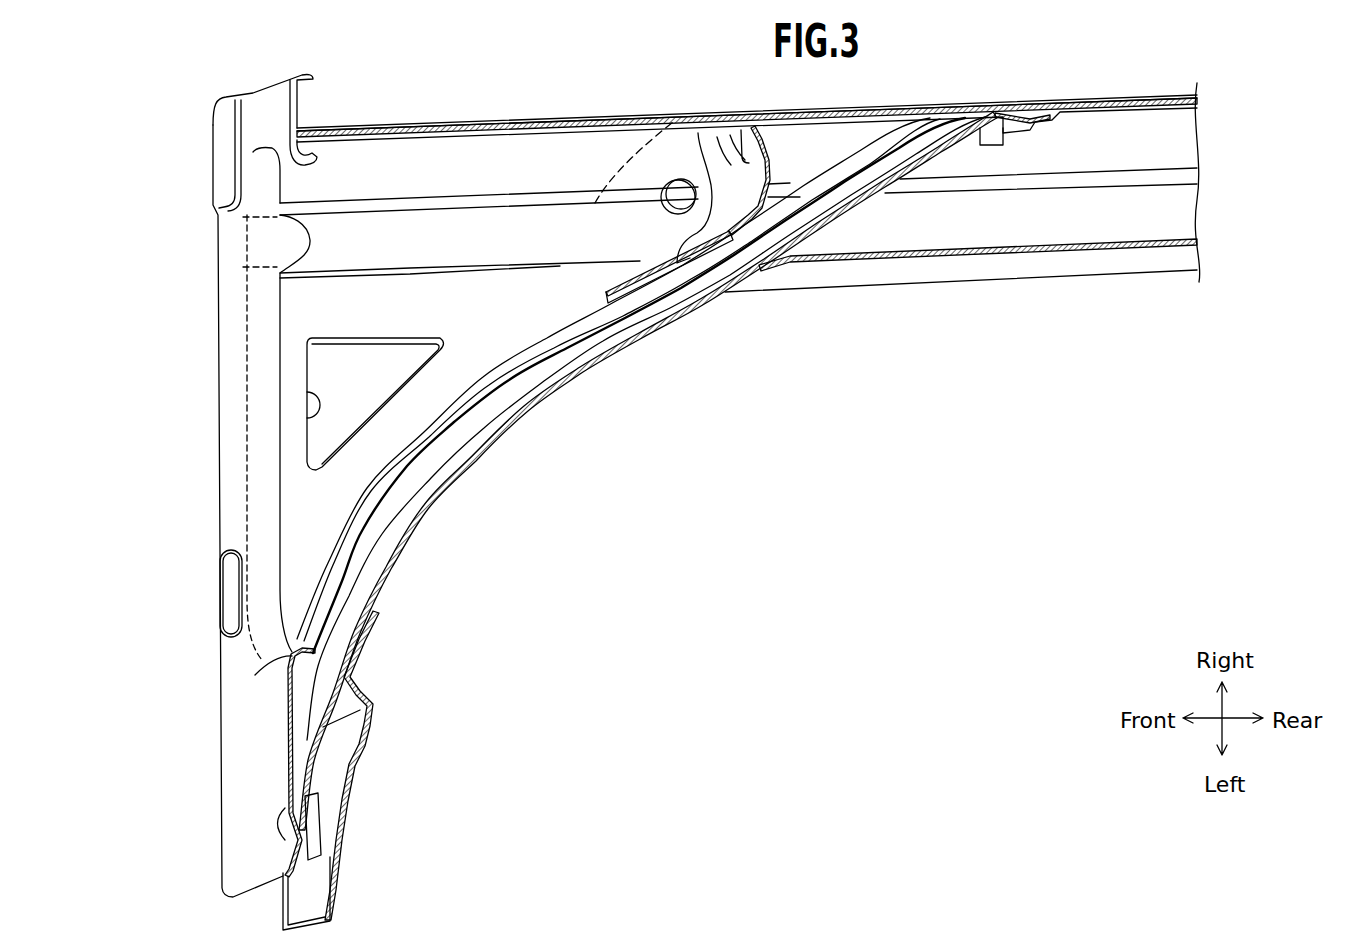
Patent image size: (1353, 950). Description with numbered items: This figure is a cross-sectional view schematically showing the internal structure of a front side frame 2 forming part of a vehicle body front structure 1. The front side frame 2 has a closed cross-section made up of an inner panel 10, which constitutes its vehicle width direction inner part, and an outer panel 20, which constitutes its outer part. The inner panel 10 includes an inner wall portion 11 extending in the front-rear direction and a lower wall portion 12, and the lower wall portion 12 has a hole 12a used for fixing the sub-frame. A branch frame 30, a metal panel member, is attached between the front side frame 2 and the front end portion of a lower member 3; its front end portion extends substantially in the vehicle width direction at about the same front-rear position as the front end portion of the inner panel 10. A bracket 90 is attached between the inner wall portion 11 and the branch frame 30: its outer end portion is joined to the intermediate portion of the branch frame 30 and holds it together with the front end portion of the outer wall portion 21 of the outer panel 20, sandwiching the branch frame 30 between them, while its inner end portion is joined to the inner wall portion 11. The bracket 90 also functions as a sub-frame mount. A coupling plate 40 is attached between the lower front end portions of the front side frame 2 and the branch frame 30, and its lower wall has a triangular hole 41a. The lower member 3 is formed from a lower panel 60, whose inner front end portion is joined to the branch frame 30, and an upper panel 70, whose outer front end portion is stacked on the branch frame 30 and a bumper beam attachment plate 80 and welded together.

The vehicle body front structure 1 is at (1036, 418).
The front side frame 2 is at (1045, 75).
The lower member 3 is at (430, 762).
The inner panel 10 is at (597, 122).
The inner wall portion 11 is at (893, 108).
The lower wall portion 12 is at (452, 165).
The hole 12a is at (680, 180).
The outer panel 20 is at (1082, 285).
The outer wall portion 21 is at (905, 258).
The branch frame 30 is at (521, 413).
The coupling plate 40 is at (304, 313).
The hole 41a is at (306, 417).
The lower panel 60 is at (347, 783).
The upper panel 70 is at (327, 837).
The bumper beam attachment plate 80 is at (218, 357).
The bracket 90 is at (738, 162).